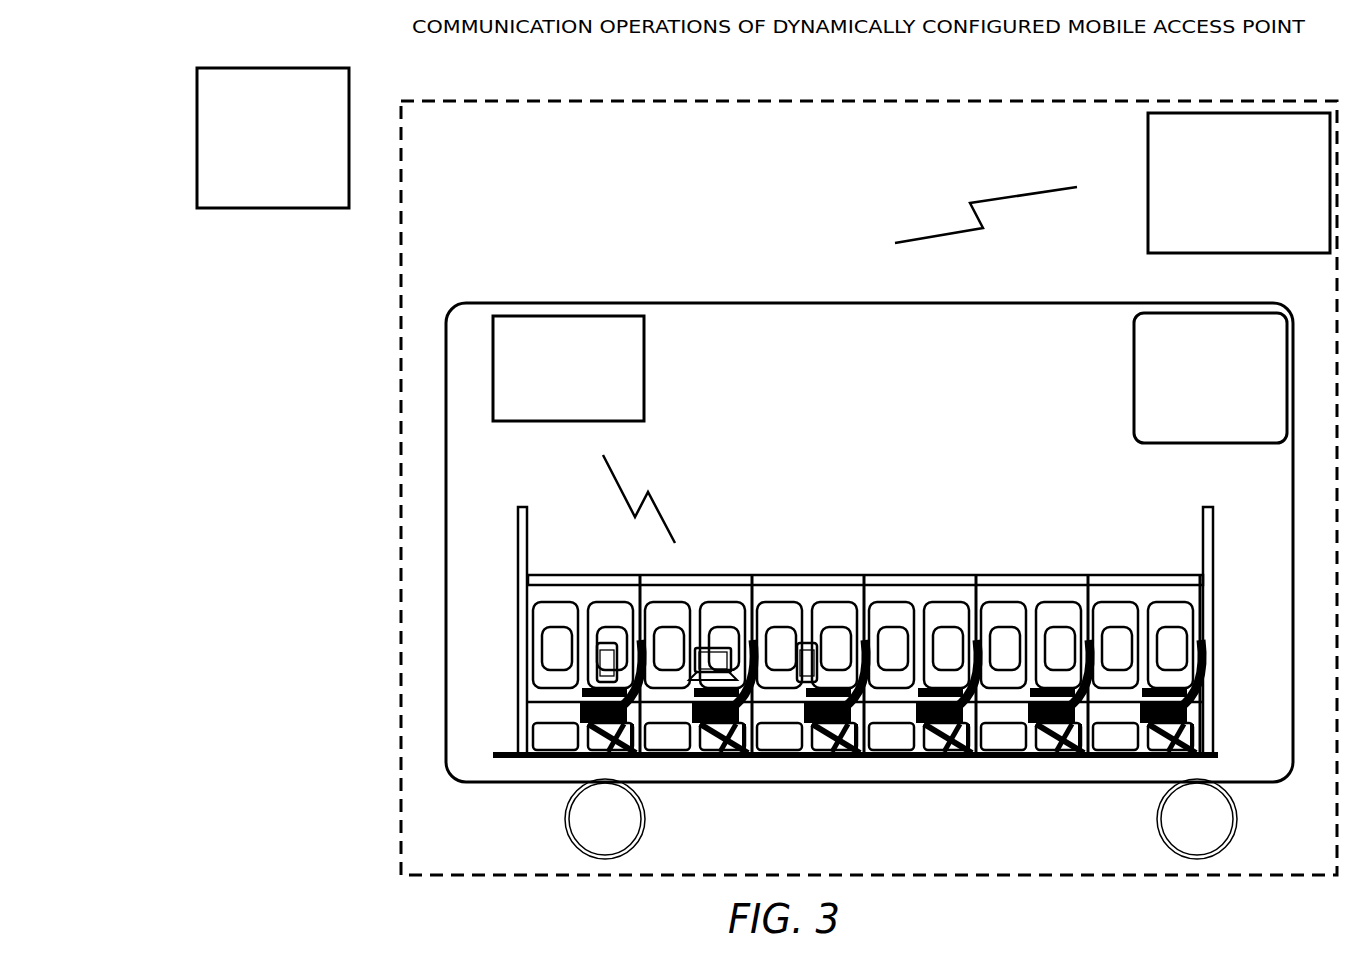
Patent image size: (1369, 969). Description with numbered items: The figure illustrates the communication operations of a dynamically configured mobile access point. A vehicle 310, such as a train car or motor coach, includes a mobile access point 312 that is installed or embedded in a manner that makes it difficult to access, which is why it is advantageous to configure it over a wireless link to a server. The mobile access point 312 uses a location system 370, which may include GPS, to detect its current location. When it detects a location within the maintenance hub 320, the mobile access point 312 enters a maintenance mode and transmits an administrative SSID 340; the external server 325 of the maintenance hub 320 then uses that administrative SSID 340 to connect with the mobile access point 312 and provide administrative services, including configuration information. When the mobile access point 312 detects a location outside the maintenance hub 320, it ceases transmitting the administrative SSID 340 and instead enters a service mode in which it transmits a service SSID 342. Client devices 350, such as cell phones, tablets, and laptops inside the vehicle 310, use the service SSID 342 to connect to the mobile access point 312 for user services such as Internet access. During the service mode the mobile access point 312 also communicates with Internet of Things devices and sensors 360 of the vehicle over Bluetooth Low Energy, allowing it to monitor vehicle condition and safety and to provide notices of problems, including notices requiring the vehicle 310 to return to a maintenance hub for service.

The vehicle 310 is at (849, 367).
The mobile access point 312 is at (549, 406).
The maintenance hub 320 is at (849, 166).
The external server 325 is at (1220, 224).
The administrative SSID 340 is at (694, 435).
The service SSID 342 is at (728, 415).
The client devices 350 is at (808, 640).
The Internet of Things (IoT) devices and sensors 360 is at (1191, 434).
The location system 370 is at (273, 138).